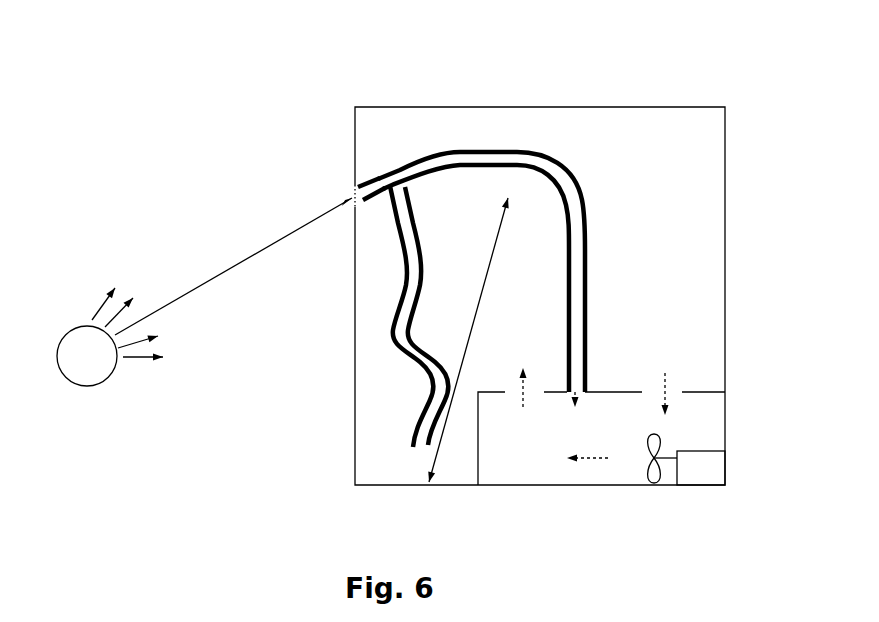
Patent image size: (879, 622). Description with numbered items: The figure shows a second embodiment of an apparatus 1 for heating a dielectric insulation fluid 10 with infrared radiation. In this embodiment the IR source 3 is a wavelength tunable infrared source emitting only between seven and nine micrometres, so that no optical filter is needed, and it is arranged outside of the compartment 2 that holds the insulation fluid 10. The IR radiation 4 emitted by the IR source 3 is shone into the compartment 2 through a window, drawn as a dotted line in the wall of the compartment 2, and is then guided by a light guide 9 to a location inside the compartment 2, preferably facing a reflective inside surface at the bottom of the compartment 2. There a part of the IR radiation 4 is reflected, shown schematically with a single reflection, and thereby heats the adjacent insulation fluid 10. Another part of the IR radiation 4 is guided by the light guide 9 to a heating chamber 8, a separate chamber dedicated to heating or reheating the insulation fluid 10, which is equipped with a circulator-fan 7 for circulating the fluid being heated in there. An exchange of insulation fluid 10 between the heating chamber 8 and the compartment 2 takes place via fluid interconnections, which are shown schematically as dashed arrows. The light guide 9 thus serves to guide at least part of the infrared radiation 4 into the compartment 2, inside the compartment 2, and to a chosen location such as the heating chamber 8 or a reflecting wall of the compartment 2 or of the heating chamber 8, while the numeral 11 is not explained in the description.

The apparatus 1 is at (672, 95).
The compartment 2 is at (563, 127).
The IR source 3 is at (73, 387).
The IR radiation 4 is at (103, 302).
The circulator-fan 7 is at (654, 483).
The heating chamber 8 is at (492, 485).
The light guide 9 is at (377, 173).
The insulation fluid 10 is at (412, 130).
The branch channel 11 is at (424, 249).